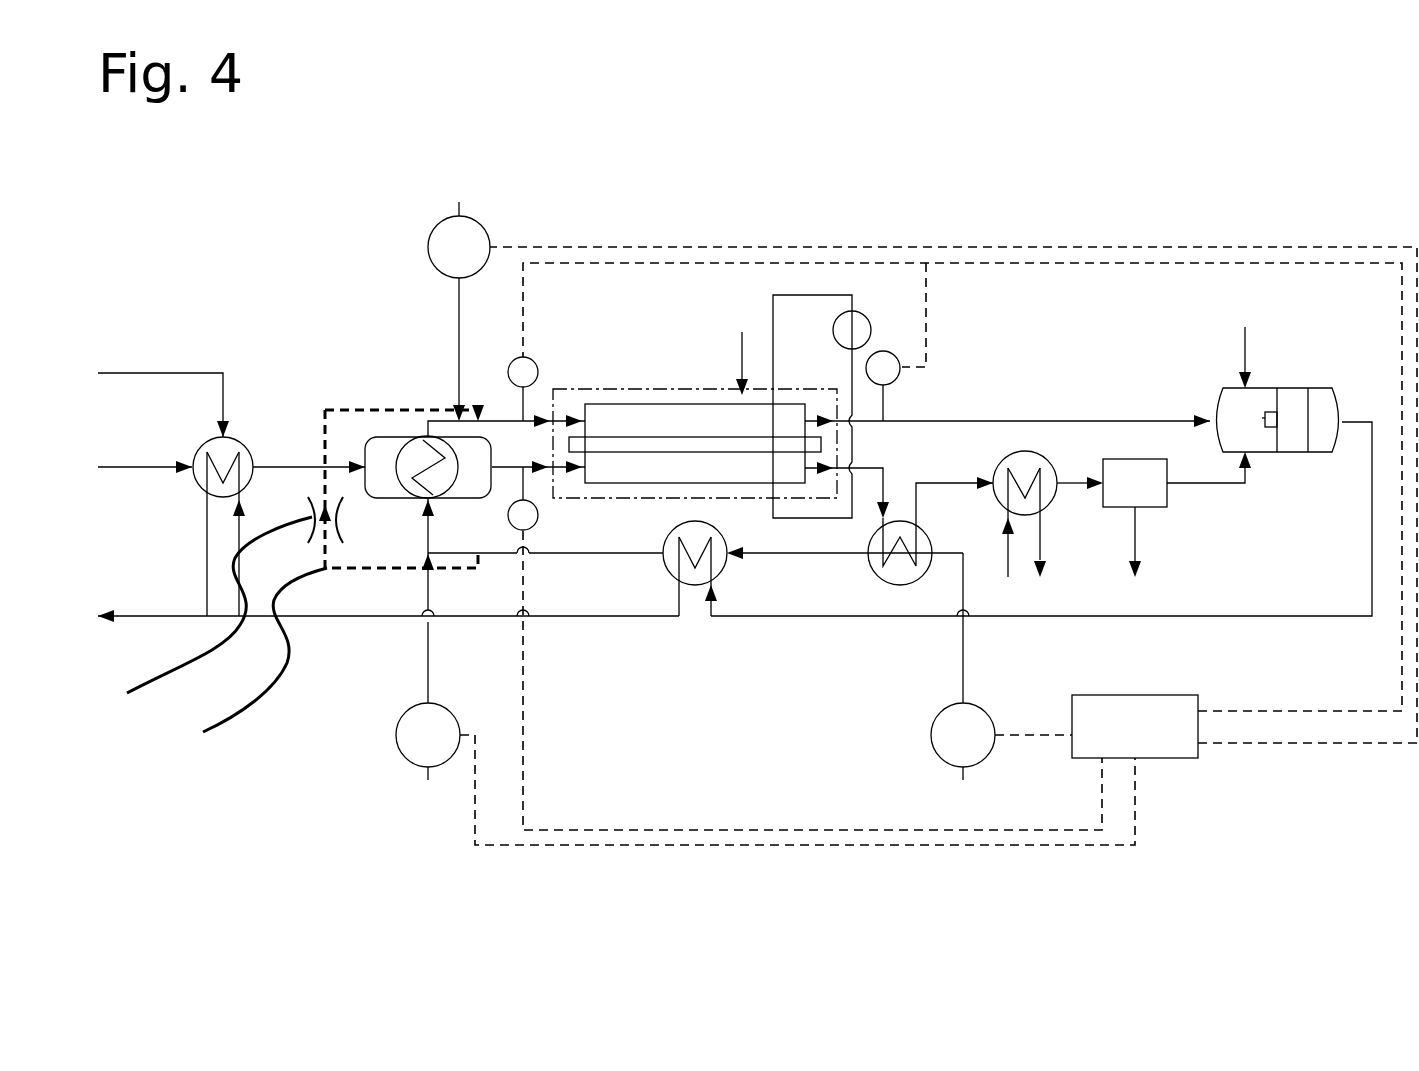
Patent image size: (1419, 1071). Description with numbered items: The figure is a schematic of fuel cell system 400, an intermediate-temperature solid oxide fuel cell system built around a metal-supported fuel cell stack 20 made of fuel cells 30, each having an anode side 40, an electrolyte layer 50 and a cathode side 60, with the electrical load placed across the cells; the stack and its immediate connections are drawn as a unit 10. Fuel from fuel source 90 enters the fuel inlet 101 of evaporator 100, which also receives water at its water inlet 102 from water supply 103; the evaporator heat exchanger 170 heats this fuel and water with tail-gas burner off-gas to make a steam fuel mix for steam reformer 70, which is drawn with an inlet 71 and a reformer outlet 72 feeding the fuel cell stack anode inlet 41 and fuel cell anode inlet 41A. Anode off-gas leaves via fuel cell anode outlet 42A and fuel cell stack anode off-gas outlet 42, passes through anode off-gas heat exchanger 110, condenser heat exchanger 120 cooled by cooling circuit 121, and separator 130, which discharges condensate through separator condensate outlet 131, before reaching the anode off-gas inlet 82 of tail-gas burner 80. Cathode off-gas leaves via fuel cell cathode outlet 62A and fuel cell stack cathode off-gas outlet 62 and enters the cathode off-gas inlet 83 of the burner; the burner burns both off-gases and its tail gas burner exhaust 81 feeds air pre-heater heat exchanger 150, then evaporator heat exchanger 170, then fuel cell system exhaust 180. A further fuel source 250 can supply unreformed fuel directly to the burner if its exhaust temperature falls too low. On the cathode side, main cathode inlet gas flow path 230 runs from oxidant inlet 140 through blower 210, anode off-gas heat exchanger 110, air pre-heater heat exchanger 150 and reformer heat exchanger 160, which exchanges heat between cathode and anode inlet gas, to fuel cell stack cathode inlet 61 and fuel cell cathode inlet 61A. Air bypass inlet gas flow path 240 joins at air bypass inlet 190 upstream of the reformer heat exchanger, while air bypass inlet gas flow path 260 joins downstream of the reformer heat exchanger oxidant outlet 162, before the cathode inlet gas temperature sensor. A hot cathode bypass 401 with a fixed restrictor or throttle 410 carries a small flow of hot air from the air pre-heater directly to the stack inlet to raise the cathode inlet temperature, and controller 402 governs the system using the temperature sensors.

The fuel cell system 400 is at (232, 292).
The electrolyzer unit 10 is at (400, 302).
The fuel cell stack 20 is at (692, 388).
The fuel cell 30 is at (790, 406).
The anode side 40 is at (680, 468).
The fuel cell stack anode inlet 41 is at (548, 473).
The fuel cell anode inlet 41A is at (578, 473).
The fuel cell stack anode off-gas outlet 42 is at (838, 473).
The fuel cell anode outlet 42A is at (805, 484).
The electrolyte layer 50 is at (625, 443).
The cathode side 60 is at (600, 420).
The fuel cell stack cathode inlet 61 is at (553, 415).
The fuel cell cathode inlet 61A is at (583, 415).
The fuel cell stack cathode off-gas outlet 62 is at (838, 415).
The fuel cell cathode outlet 62A is at (805, 415).
The steam reformer 70 is at (366, 436).
The feed inlet 71 is at (362, 463).
The reformer outlet 72 is at (495, 466).
The tail-gas burner 80 is at (1220, 387).
The tail gas burner exhaust 81 is at (1340, 420).
The anode off-gas inlet 82 is at (1245, 453).
The cathode off-gas inlet 83 is at (1210, 418).
The fuel source 90 is at (122, 468).
The evaporator 100 is at (243, 444).
The fuel inlet 101 is at (190, 466).
The water inlet 102 is at (218, 431).
The water supply 103 is at (138, 399).
The anode off-gas heat exchanger 110 is at (867, 565).
The condenser heat exchanger 120 is at (1050, 505).
The cooling circuit 121 is at (1015, 535).
The separator 130 is at (1177, 479).
The separator condensate outlet 131 is at (1138, 555).
The oxidant inlet 140 is at (963, 755).
The air pre-heater heat exchanger 150 is at (667, 567).
The reformer heat exchanger 160 is at (373, 437).
The reformer heat exchanger oxidant outlet 162 is at (420, 452).
The evaporator heat exchanger 170 is at (205, 477).
The fuel cell system exhaust 180 is at (363, 615).
The air bypass inlet 190 is at (420, 562).
The blower 210 is at (930, 735).
The main cathode inlet gas flow path 230 is at (960, 648).
The air bypass inlet gas flow path 240 is at (425, 660).
The fuel source 250 is at (1248, 347).
The air bypass inlet gas flow path 260 is at (457, 295).
The hot cathode bypass 401 is at (243, 661).
The controller 402 is at (938, 546).
The fixed restrictor or throttle 410 is at (198, 613).